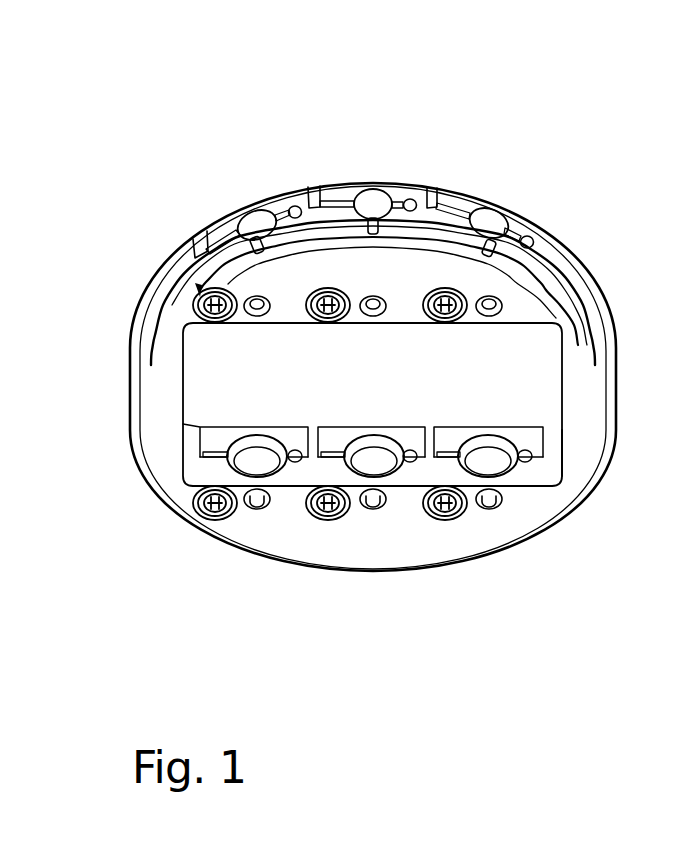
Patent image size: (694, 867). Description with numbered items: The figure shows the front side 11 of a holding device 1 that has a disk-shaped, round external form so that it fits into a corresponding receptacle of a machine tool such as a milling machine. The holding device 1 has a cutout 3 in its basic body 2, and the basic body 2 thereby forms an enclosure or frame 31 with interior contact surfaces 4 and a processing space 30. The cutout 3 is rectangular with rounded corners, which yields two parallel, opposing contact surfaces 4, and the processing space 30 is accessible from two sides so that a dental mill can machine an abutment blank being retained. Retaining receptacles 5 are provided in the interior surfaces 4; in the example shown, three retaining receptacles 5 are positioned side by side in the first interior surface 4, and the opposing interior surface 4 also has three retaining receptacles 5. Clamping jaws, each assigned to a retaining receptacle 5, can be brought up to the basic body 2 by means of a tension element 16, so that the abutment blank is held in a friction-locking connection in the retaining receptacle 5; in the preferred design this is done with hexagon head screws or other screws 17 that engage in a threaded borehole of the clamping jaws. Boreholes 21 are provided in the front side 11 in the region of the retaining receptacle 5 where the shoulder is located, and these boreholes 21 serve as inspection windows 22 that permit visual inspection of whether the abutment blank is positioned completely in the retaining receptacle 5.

The holding device 1 is at (203, 172).
The basic body 2 is at (523, 297).
The cutout 3 is at (537, 350).
The interior contact surfaces 4 is at (537, 468).
The retaining receptacles 5 is at (494, 463).
The front side 11 is at (580, 445).
The tension element 16 is at (450, 290).
The screws 17 is at (206, 508).
The boreholes 21 is at (383, 505).
The inspection windows 22 is at (260, 507).
The processing space 30 is at (547, 400).
The frame 31 is at (590, 417).